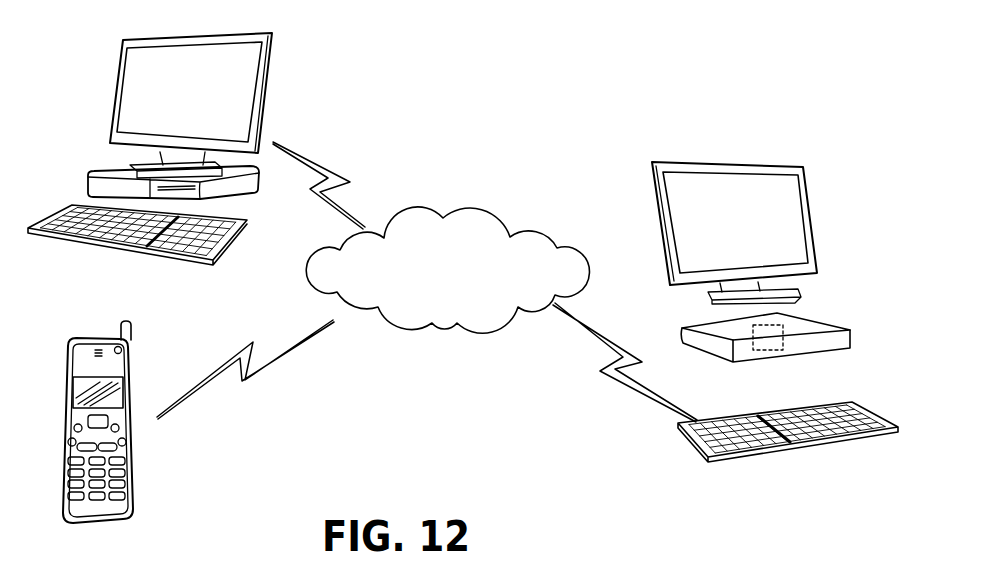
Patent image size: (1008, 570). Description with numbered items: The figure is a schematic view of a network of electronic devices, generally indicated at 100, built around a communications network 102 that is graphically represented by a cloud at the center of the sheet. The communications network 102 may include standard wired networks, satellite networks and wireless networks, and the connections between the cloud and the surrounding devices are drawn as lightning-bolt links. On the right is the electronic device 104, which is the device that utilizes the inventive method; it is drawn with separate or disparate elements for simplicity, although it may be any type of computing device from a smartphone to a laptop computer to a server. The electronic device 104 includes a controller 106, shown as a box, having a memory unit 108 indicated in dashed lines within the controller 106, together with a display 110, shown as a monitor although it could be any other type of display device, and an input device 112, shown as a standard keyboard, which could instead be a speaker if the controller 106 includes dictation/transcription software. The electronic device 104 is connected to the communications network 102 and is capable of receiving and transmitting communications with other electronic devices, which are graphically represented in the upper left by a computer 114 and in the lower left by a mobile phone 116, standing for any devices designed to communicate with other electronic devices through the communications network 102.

The network of electronic devices 100 is at (373, 177).
The communications network 102 is at (447, 328).
The electronic device 104 is at (658, 232).
The controller 106 is at (850, 337).
The memory unit 108 is at (753, 332).
The display 110 is at (813, 228).
The input device 112 is at (877, 413).
The computer 114 is at (110, 98).
The mobile phone 116 is at (133, 457).